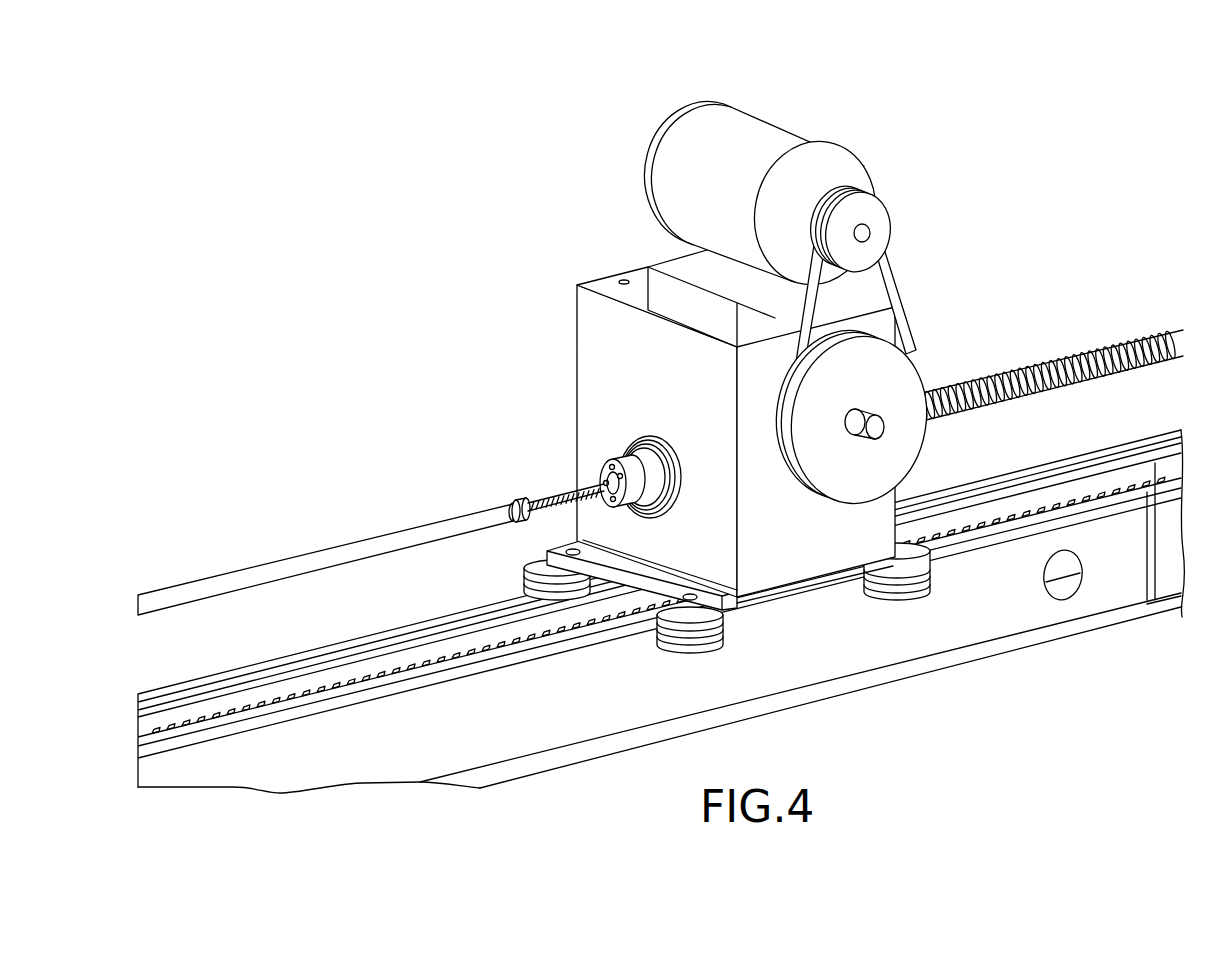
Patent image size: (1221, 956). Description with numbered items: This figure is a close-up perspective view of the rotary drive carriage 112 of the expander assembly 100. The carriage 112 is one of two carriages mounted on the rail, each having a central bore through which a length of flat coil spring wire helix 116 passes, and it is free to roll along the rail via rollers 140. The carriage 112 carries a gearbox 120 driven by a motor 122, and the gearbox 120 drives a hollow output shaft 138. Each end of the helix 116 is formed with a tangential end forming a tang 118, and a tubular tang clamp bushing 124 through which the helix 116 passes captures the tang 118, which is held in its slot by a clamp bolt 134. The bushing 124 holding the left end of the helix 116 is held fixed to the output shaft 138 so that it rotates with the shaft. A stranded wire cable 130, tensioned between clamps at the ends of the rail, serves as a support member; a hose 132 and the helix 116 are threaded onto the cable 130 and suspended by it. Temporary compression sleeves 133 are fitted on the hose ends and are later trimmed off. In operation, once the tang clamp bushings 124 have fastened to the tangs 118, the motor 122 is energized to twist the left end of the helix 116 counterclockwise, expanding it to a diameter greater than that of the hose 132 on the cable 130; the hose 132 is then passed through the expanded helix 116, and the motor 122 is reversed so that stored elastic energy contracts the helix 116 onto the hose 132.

The assembly 100 is at (661, 427).
The rotary drive carriage 112 is at (828, 610).
The flat coil spring wire helix 116 is at (1052, 366).
The tang 118 is at (612, 462).
The gearbox 120 is at (590, 378).
The motor 122 is at (762, 118).
The tubular tang clamp bushing 124 is at (648, 486).
The stranded wire cable 130 is at (543, 493).
The hose 132 is at (433, 520).
The temporary compression sleeve 133 is at (527, 518).
The clamp bolt 134 is at (627, 513).
The hollow output shaft 138 is at (660, 455).
The rollers 140 is at (700, 652).